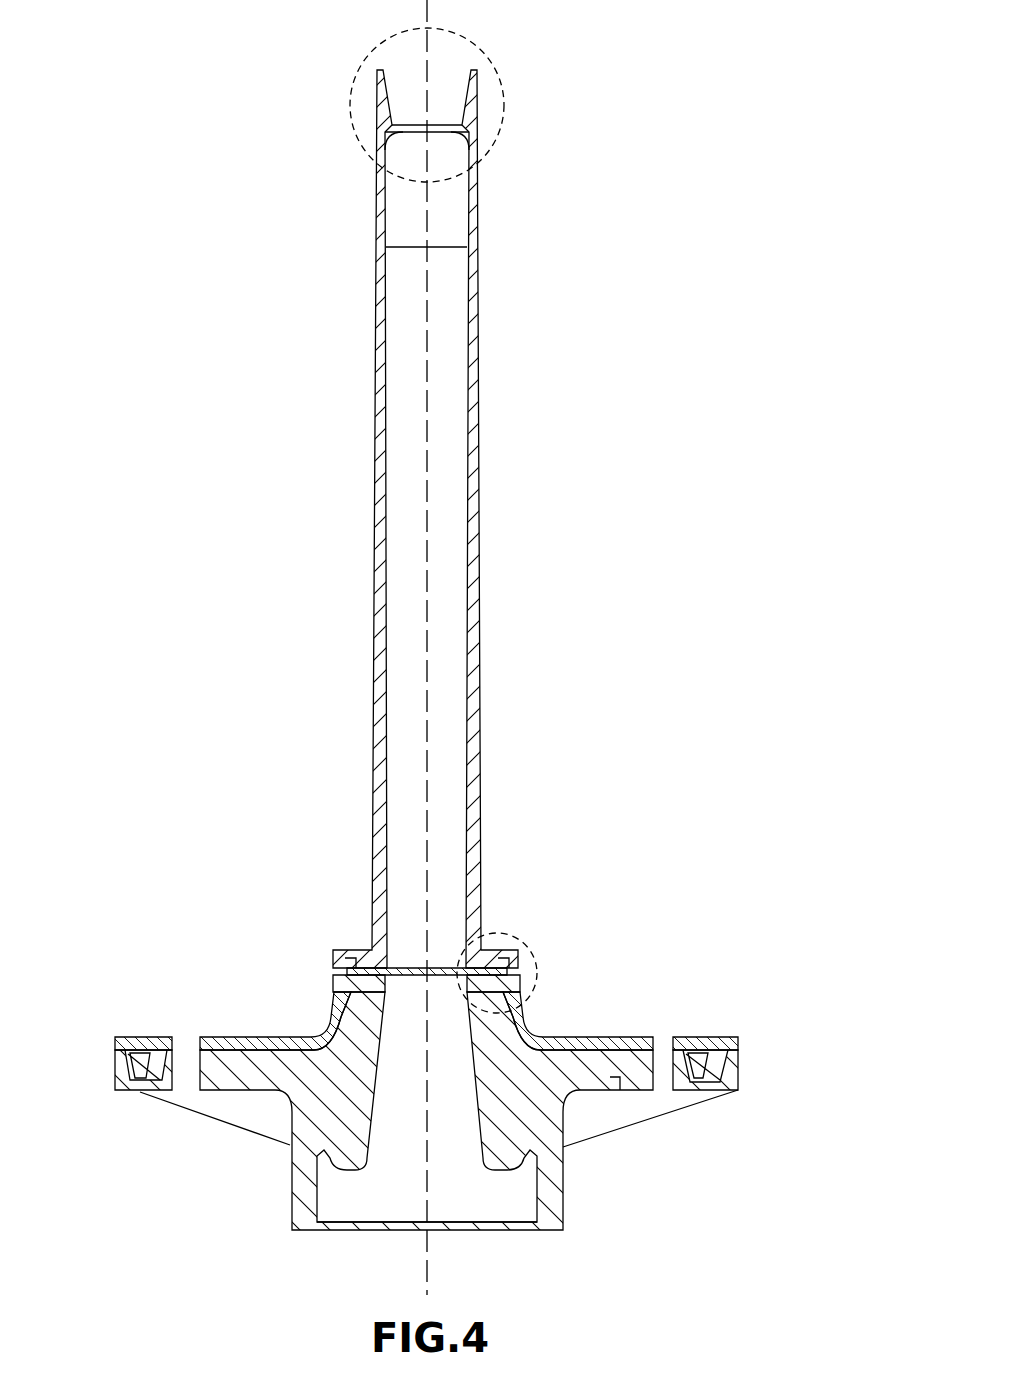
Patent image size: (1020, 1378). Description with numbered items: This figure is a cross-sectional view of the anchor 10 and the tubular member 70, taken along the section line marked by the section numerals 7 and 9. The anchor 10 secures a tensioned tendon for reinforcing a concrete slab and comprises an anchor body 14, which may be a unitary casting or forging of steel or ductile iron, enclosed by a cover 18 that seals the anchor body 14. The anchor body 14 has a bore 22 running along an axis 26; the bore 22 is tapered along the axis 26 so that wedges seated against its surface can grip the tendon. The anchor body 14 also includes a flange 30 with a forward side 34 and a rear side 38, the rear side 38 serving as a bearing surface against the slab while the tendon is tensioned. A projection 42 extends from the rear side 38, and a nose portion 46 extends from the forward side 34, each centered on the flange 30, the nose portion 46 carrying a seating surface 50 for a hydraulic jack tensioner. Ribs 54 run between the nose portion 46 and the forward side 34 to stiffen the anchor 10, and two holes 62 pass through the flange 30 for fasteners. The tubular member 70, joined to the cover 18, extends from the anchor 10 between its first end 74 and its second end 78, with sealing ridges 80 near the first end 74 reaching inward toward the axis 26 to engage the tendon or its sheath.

The detail circle 7 is at (523, 943).
The detail circle 9 is at (352, 78).
The anchor 10 is at (702, 130).
The anchor body 14 is at (338, 1174).
The cover 18 is at (473, 1063).
The bore 22 is at (475, 1108).
The axis 26 is at (429, 572).
The flange 30 is at (742, 1040).
The forward side 34 is at (605, 1093).
The rear side 38 is at (610, 1040).
The projection 42 is at (332, 985).
The nose portion 46 is at (563, 1143).
The seating surface 50 is at (508, 1165).
The ribs 54 is at (235, 1120).
The holes 62 is at (735, 1053).
The tubular member 70 is at (502, 722).
The first end 74 is at (470, 58).
The second end 78 is at (520, 957).
The sealing ridges 80 is at (388, 145).